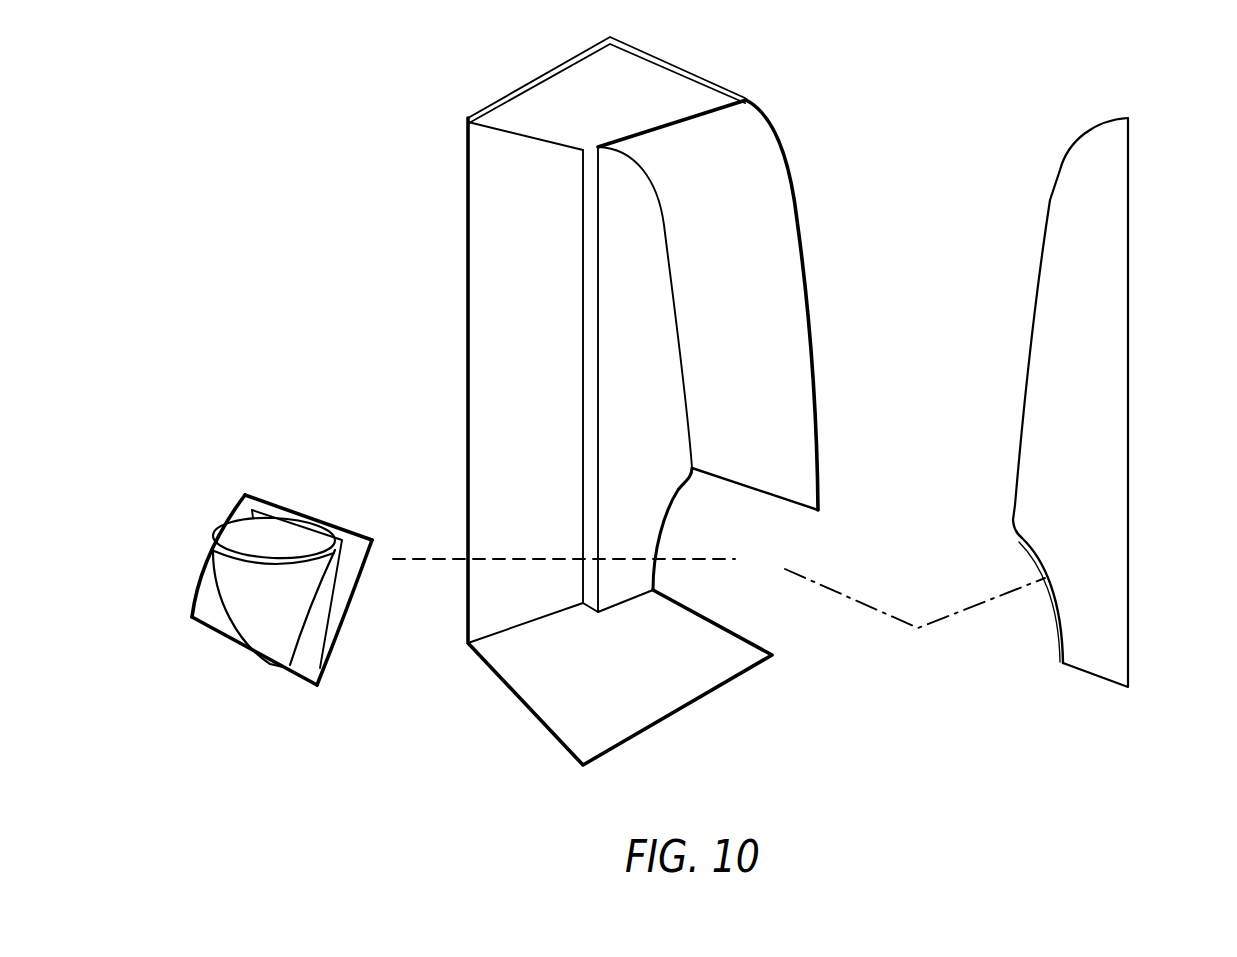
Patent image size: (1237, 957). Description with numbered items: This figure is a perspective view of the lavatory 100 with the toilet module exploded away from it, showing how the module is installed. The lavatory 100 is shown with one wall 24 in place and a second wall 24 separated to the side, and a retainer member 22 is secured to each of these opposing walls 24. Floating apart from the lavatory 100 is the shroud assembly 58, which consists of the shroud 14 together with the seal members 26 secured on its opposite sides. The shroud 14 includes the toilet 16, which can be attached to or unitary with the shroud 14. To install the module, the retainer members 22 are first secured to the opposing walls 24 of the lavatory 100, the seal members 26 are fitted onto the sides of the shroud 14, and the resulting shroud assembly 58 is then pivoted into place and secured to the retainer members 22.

The lavatory 100 is at (813, 134).
The wall 24 is at (626, 507).
The retainer member 22 is at (673, 513).
The shroud assembly 58 is at (273, 579).
The shroud 14 is at (305, 662).
The seal member 26 is at (198, 600).
The toilet 16 is at (228, 663).